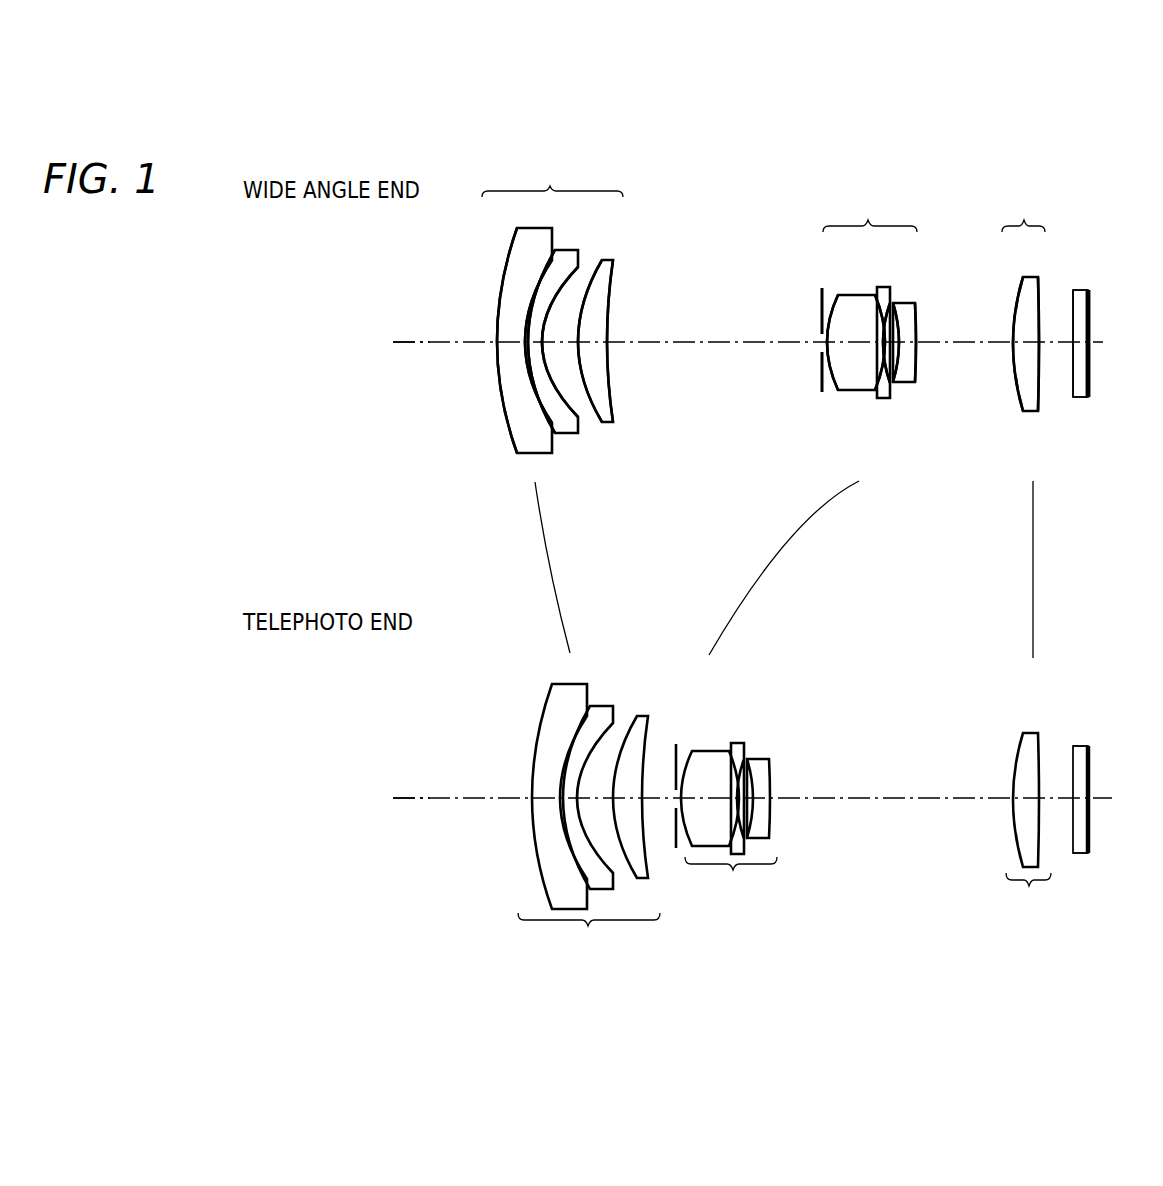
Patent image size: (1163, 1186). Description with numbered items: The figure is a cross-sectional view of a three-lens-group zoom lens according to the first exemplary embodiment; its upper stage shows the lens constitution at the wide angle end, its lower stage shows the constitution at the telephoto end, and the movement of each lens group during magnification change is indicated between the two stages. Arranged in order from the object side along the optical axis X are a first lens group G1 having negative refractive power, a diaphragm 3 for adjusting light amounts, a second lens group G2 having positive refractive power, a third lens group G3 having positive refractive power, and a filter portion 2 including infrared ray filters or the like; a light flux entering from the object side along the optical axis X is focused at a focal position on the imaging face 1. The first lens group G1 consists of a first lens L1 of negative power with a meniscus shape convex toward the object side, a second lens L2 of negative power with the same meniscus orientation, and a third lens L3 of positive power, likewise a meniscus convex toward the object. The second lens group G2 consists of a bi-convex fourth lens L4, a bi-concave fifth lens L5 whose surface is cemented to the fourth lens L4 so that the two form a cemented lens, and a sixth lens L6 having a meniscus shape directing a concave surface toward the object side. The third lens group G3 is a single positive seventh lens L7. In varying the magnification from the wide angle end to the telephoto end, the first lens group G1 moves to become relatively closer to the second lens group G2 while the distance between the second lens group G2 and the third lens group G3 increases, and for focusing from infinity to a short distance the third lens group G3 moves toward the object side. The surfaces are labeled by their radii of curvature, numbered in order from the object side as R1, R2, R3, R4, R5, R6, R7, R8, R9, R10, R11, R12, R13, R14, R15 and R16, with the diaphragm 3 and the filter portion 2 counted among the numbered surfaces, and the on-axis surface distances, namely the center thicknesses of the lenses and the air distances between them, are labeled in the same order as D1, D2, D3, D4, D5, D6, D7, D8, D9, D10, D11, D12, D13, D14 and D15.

The imaging face 1 is at (1089, 310).
The filter portion 2 is at (1082, 398).
The diaphragm 3 is at (820, 290).
The optical axis X is at (413, 344).
The first lens group G1 is at (571, 562).
The second lens group G2 is at (801, 552).
The third lens group G3 is at (1026, 555).
The first lens L1 is at (518, 228).
The second lens L2 is at (572, 250).
The third lens L3 is at (613, 260).
The fourth lens L4 is at (858, 295).
The fifth lens L5 is at (888, 287).
The sixth lens L6 is at (905, 302).
The seventh lens L7 is at (1025, 275).
The radius of curvature of first lens surface R1 is at (502, 260).
The radius of curvature of second lens surface R2 is at (520, 308).
The radius of curvature of third lens surface R3 is at (532, 290).
The radius of curvature of fourth lens surface R4 is at (578, 268).
The radius of curvature of fifth lens surface R5 is at (587, 290).
The radius of curvature of sixth lens surface R6 is at (608, 308).
The radius of curvature of seventh surface R7 is at (820, 318).
The radius of curvature of eighth lens surface R8 is at (840, 300).
The radius of curvature of ninth lens surface R9 is at (880, 292).
The radius of curvature of tenth lens surface R10 is at (887, 330).
The radius of curvature of eleventh lens surface R11 is at (897, 375).
The radius of curvature of twelfth lens surface R12 is at (915, 320).
The radius of curvature of thirteenth lens surface R13 is at (1018, 295).
The radius of curvature of fourteenth lens surface R14 is at (1045, 308).
The radius of curvature of fifteenth surface R15 is at (1072, 292).
The radius of curvature of sixteenth surface R16 is at (1088, 292).
The on-axis surface distance D1 is at (500, 347).
The on-axis surface distance D2 is at (510, 333).
The on-axis surface distance D3 is at (527, 350).
The on-axis surface distance D4 is at (560, 347).
The on-axis surface distance D5 is at (597, 347).
The on-axis surface distance D6 is at (677, 343).
The on-axis surface distance D7 is at (822, 350).
The on-axis surface distance D8 is at (830, 335).
The on-axis surface distance D9 is at (880, 350).
The on-axis surface distance D10 is at (905, 350).
The on-axis surface distance D11 is at (895, 340).
The on-axis surface distance D12 is at (967, 350).
The on-axis surface distance D13 is at (1023, 340).
The on-axis surface distance D14 is at (1063, 350).
The on-axis surface distance D15 is at (1082, 347).